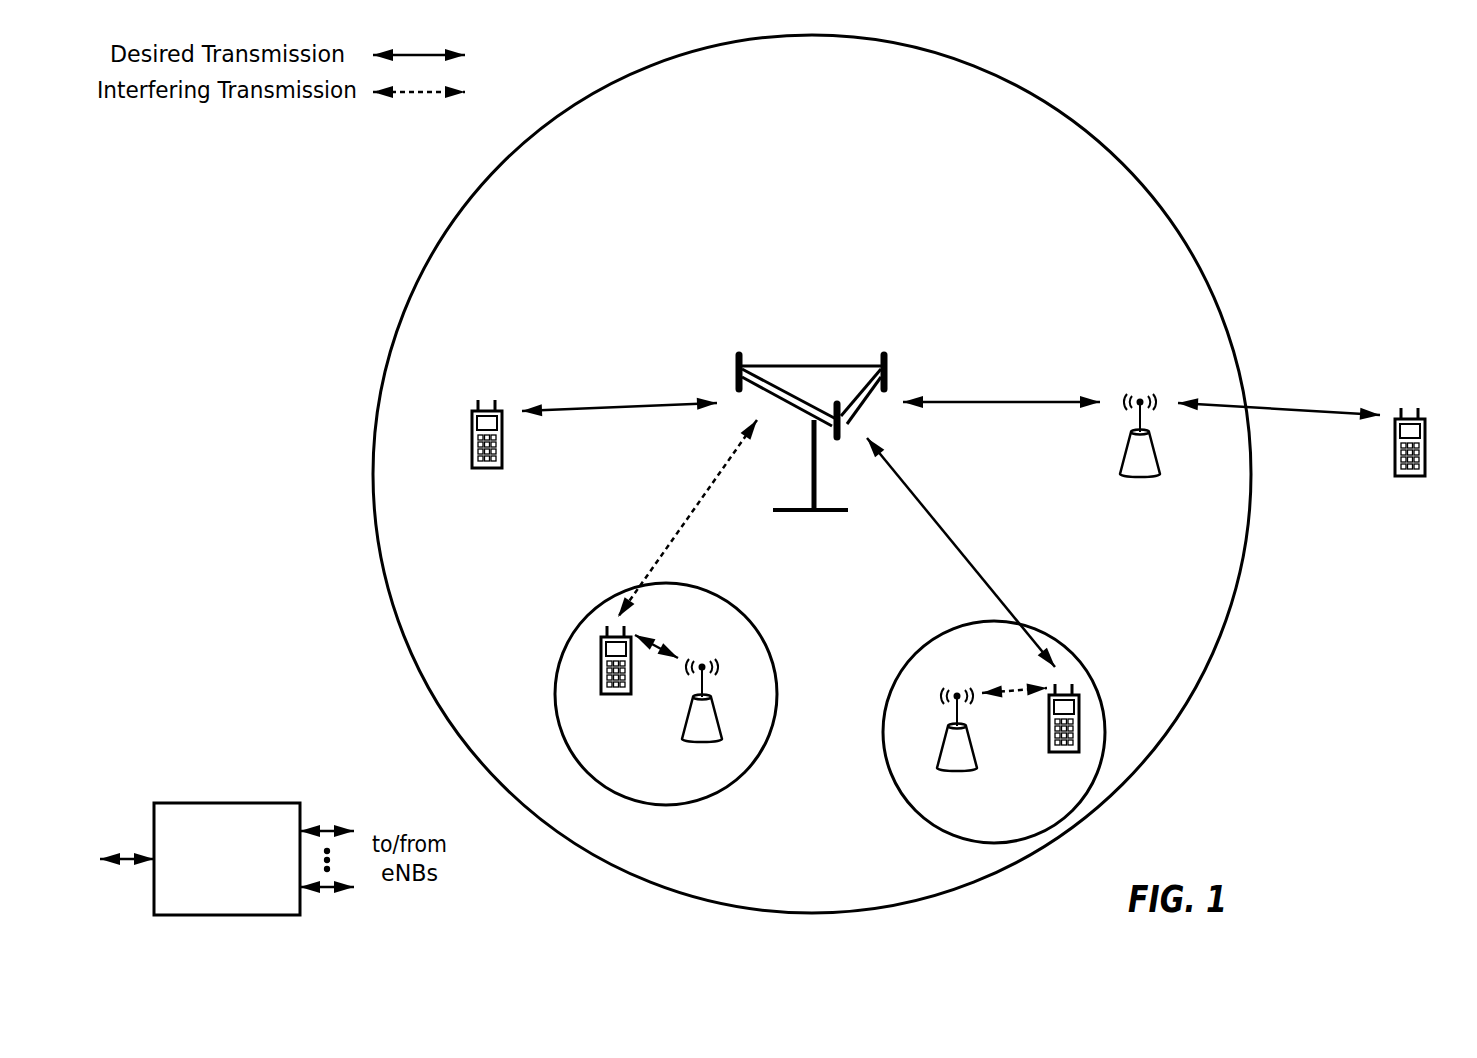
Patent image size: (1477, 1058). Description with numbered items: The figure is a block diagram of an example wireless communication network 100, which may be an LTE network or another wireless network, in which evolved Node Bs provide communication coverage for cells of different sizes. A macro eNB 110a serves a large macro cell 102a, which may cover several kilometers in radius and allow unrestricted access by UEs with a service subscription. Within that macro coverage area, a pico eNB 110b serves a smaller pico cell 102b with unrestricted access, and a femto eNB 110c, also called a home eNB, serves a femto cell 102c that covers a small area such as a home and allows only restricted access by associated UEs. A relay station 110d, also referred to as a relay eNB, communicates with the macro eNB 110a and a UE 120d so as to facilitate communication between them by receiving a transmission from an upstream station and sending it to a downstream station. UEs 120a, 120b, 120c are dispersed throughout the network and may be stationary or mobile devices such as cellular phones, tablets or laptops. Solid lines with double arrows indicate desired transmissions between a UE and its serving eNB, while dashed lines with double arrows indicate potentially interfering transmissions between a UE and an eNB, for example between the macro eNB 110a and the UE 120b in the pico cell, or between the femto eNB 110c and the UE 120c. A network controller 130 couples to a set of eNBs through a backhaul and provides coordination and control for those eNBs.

The wireless communication network 100 is at (1333, 101).
The macro cell 102a is at (1104, 145).
The pico cell 102b is at (752, 622).
The femto cell 102c is at (908, 660).
The macro eNB 110a is at (809, 364).
The pico eNB 110b is at (713, 721).
The femto eNB 110c is at (942, 748).
The relay station 110d is at (1141, 396).
The UE 120a is at (472, 418).
The UE 120b is at (601, 688).
The UE 120c is at (1049, 747).
The UE 120d is at (1425, 432).
The network controller 130 is at (226, 803).